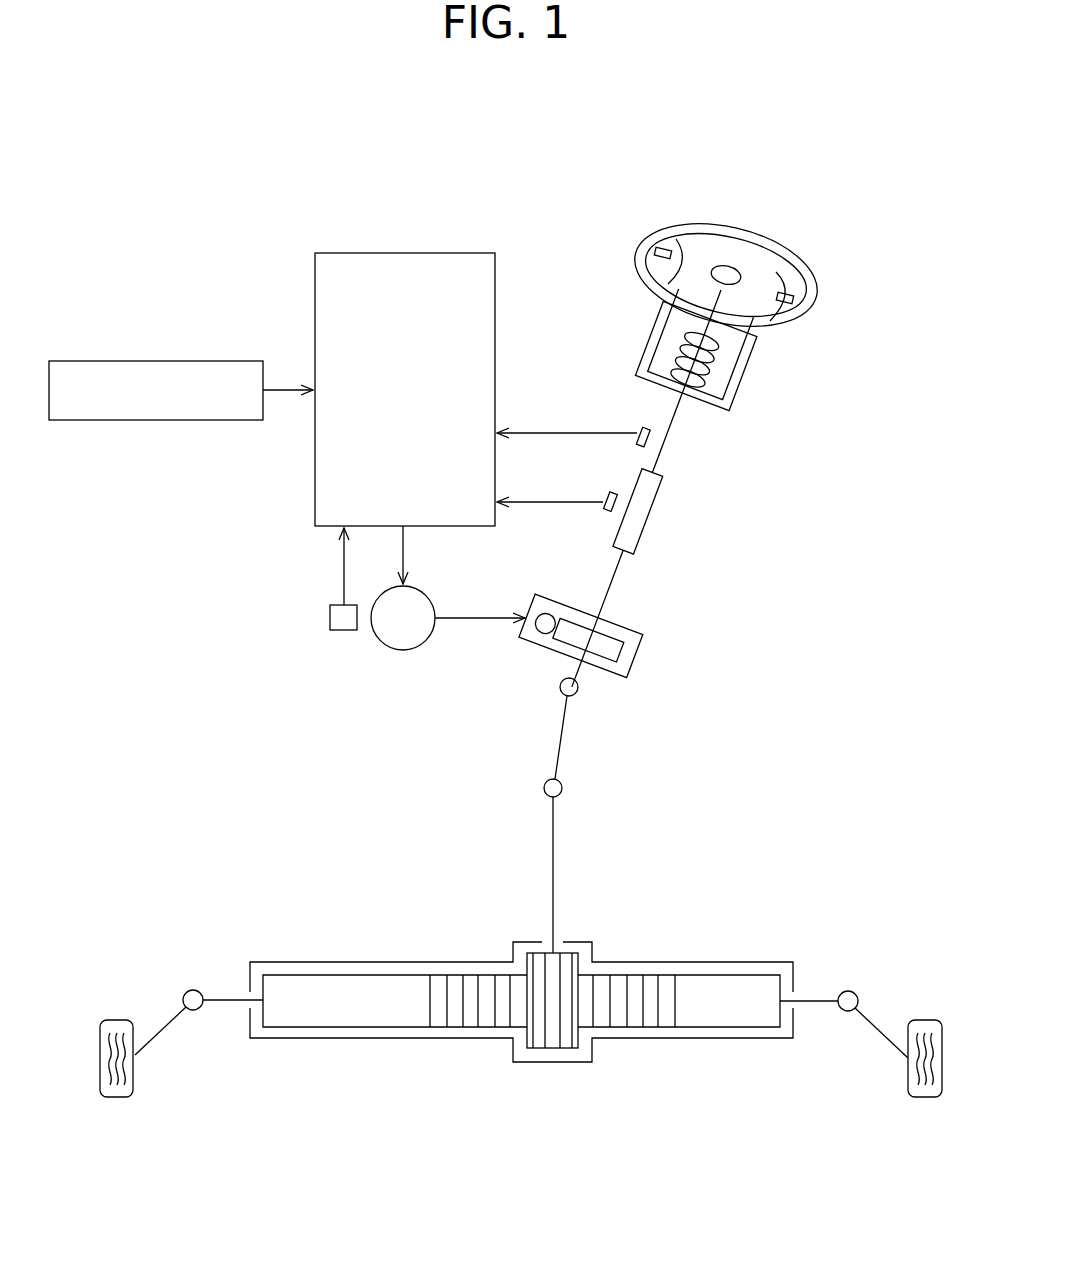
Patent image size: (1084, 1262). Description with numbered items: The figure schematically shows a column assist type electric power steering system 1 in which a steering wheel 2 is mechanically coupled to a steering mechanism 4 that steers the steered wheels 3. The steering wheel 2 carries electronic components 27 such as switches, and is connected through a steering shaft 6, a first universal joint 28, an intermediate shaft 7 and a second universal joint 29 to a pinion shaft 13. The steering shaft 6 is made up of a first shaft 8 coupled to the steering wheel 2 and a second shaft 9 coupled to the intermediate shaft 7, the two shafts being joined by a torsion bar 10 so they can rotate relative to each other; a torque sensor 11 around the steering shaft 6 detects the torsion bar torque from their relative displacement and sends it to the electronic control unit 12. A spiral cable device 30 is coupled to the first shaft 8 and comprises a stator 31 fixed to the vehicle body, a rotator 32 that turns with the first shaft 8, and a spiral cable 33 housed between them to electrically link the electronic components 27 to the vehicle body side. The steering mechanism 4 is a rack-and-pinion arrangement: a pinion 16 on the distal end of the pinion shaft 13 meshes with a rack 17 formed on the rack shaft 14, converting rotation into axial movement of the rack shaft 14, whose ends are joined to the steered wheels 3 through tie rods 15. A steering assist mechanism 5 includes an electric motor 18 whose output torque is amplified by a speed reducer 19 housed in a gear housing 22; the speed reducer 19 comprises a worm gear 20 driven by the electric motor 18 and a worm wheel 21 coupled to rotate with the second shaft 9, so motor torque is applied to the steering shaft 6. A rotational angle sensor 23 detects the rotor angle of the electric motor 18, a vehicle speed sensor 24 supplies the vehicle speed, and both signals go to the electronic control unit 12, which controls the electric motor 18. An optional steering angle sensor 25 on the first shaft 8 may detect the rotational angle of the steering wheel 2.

The electric power steering system 1 is at (326, 198).
The steering wheel 2 is at (731, 229).
The steered wheels 3 is at (118, 1020).
The steering mechanism 4 is at (521, 1008).
The steering assist mechanism 5 is at (588, 606).
The steering shaft 6 is at (680, 421).
The intermediate shaft 7 is at (560, 757).
The first shaft 8 is at (661, 458).
The second shaft 9 is at (620, 566).
The torsion bar 10 is at (645, 523).
The torque sensor 11 is at (606, 512).
The electronic control unit 12 is at (455, 253).
The pinion shaft 13 is at (556, 857).
The rack shaft 14 is at (727, 1031).
The tie rods 15 is at (166, 1029).
The pinion 16 is at (551, 1040).
The rack 17 is at (456, 1019).
The electric motor 18 is at (403, 650).
The speed reducer 19 is at (645, 634).
The worm gear 20 is at (537, 629).
The worm wheel 21 is at (621, 653).
The gear housing 22 is at (612, 676).
The rotational angle sensor 23 is at (330, 618).
The vehicle speed sensor 24 is at (110, 361).
The steering angle sensor 25 is at (637, 446).
The electronic components 27 is at (655, 253).
The first universal joint 28 is at (560, 690).
The second universal joint 29 is at (544, 789).
The spiral cable device 30 is at (708, 363).
The stator 31 is at (648, 345).
The rotator 32 is at (746, 340).
The spiral cable 33 is at (728, 400).